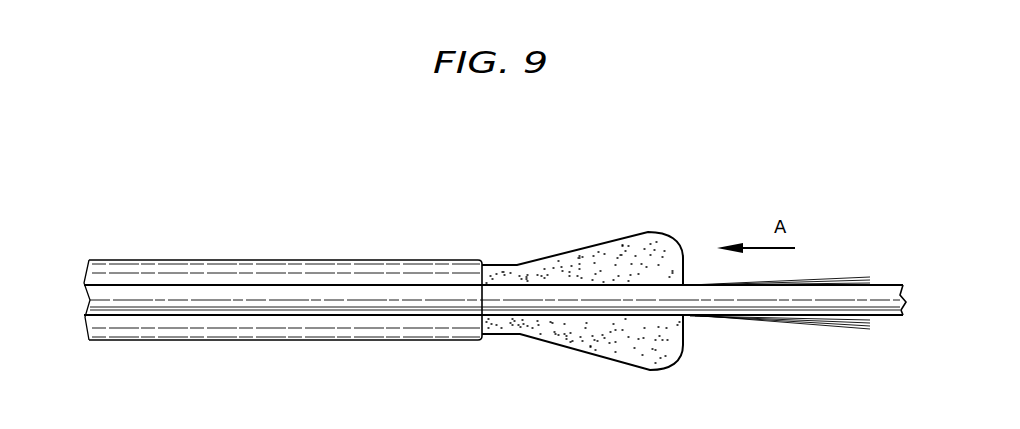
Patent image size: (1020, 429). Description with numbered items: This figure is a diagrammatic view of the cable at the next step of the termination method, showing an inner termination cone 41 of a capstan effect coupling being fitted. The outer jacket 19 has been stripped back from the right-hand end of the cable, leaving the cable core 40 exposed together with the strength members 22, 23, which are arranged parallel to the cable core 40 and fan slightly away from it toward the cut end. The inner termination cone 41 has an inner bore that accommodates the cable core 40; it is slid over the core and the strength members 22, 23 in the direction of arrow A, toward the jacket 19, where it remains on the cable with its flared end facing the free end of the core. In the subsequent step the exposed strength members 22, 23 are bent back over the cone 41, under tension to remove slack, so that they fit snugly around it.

The jacket 19 is at (408, 278).
The cable core 40 is at (883, 283).
The inner termination cone 41 is at (657, 231).
The wires 22 is at (808, 318).
The wires 23 is at (850, 327).